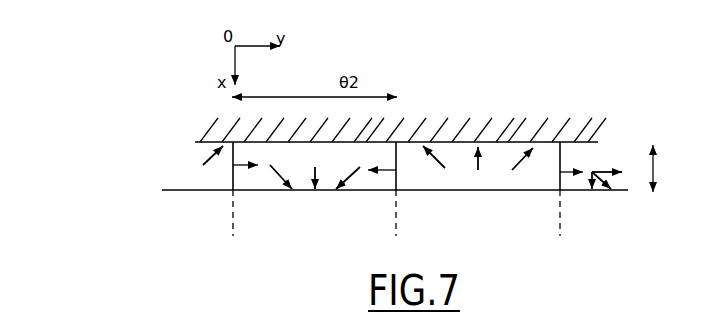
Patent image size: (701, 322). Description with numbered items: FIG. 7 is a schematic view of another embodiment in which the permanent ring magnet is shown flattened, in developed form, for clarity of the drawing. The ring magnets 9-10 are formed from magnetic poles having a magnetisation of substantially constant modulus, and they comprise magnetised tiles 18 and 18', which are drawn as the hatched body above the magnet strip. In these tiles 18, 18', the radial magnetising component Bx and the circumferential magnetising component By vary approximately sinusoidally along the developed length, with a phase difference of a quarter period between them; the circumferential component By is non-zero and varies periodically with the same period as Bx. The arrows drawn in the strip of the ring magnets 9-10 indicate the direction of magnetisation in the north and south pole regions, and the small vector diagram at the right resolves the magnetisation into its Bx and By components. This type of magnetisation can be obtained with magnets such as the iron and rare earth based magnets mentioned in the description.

The magnetised tile 18 is at (333, 108).
The magnetised tile 18' is at (503, 108).
The ring magnets 9-10 is at (175, 165).